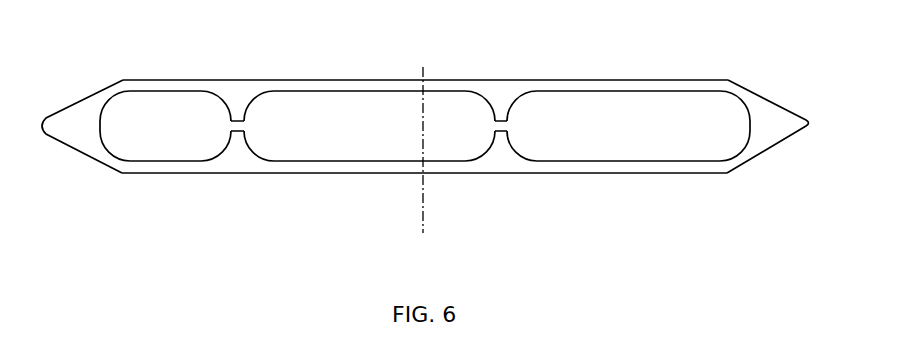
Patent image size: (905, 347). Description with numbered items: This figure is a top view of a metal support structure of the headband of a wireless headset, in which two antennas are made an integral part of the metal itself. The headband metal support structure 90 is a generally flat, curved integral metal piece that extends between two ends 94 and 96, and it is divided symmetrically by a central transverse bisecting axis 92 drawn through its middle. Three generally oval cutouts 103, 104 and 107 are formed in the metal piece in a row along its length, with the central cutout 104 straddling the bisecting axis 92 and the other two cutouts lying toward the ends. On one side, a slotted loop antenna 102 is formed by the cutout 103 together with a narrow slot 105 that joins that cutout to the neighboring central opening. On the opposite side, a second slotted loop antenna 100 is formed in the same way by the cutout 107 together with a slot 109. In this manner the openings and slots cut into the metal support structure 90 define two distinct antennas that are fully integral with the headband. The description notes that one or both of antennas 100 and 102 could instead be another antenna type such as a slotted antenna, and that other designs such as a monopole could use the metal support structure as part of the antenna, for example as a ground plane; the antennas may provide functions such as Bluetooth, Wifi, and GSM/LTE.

The headband metal support structure 90 is at (414, 100).
The central transverse bisecting axis 92 is at (419, 226).
The end 94 is at (60, 121).
The end 96 is at (815, 123).
The second slotted loop antenna 100 is at (150, 86).
The slotted loop antenna 102 is at (672, 77).
The cutout 103 is at (560, 91).
The cutout 104 is at (303, 91).
The slot 105 is at (500, 133).
The cutout 107 is at (160, 162).
The slot 109 is at (237, 132).